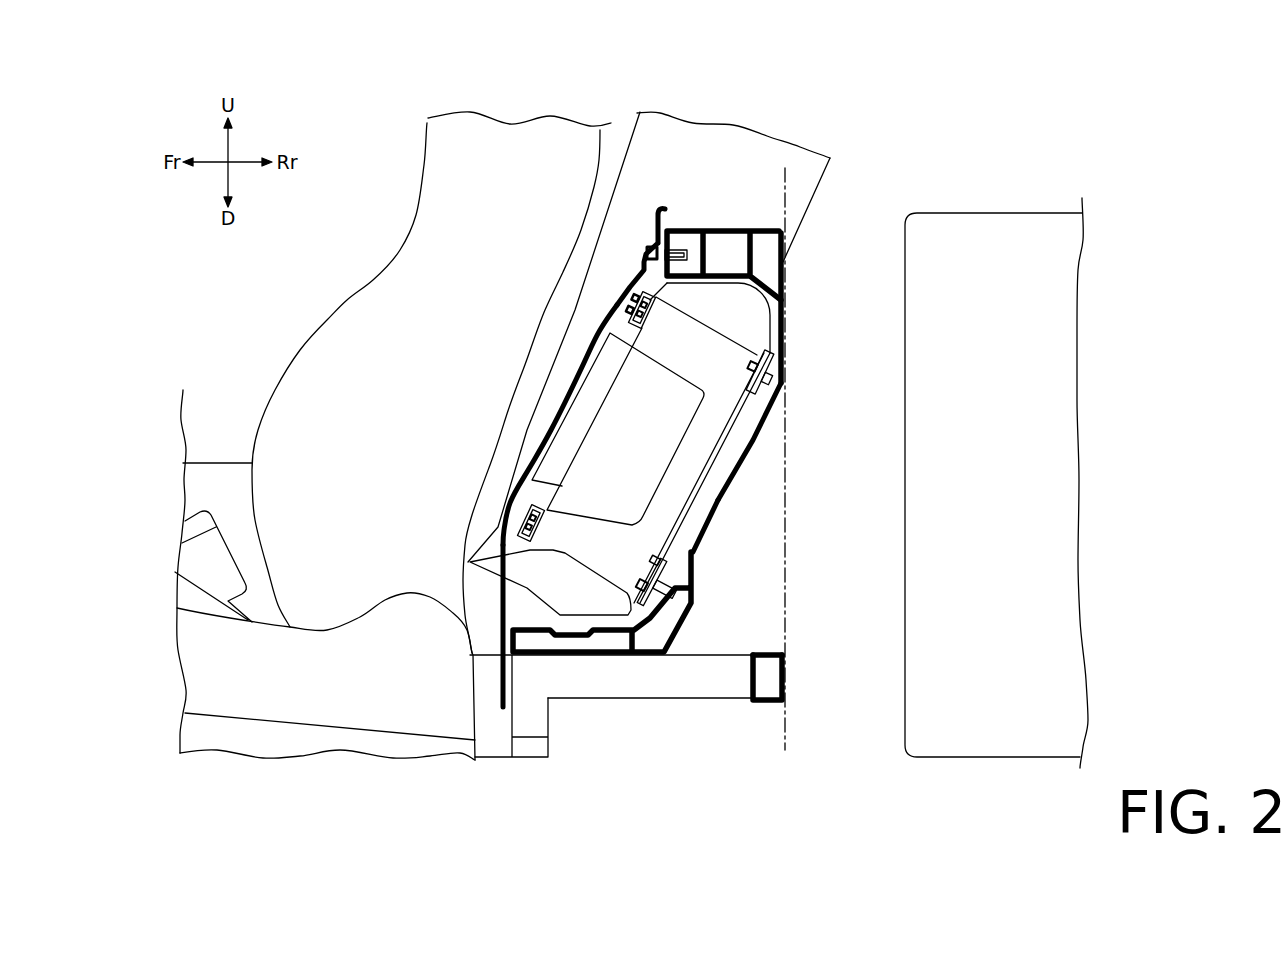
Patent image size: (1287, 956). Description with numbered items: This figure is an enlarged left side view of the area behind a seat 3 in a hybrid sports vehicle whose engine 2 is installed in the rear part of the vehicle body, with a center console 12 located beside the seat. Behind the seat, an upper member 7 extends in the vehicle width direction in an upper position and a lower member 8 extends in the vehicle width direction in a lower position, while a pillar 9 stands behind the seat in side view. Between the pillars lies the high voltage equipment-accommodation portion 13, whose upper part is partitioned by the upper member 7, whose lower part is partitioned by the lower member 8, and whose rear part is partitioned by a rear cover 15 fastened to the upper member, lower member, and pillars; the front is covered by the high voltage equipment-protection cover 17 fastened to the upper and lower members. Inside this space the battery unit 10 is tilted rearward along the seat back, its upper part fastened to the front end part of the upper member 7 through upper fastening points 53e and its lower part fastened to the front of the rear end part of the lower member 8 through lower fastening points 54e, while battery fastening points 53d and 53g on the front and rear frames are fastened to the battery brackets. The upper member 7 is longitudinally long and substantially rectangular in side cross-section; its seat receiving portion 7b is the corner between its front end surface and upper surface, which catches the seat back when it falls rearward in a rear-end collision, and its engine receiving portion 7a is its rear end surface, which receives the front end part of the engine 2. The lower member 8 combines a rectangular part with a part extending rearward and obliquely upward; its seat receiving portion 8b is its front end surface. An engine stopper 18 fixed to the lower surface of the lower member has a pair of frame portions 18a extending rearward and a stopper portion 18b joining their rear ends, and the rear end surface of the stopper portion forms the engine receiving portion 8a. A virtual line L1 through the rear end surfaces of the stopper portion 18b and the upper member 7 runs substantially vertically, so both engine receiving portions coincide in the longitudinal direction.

The engine 2 is at (993, 212).
The seat 3 is at (352, 343).
The upper member 7 is at (727, 228).
The engine receiving portion 7a is at (787, 253).
The seat receiving portion 7b is at (652, 242).
The lower member 8 is at (676, 627).
The engine receiving portion 8a is at (787, 673).
The seat receiving portion 8b is at (512, 630).
The pillar 9 is at (698, 147).
The battery unit 10 is at (753, 413).
The center console 12 is at (222, 463).
The high voltage equipment-accommodation portion 13 is at (758, 465).
The rear cover 15 is at (711, 527).
The high voltage equipment-protection cover 17 is at (581, 367).
The engine stopper 18 is at (710, 707).
The frame portion 18a is at (637, 699).
The stopper portion 18b is at (770, 651).
The battery fastening point 53d is at (628, 303).
The upper fastening point 53e is at (645, 255).
The battery fastening point 53g is at (768, 352).
The lower fastening point 54e is at (668, 568).
The virtual line L1 is at (795, 521).